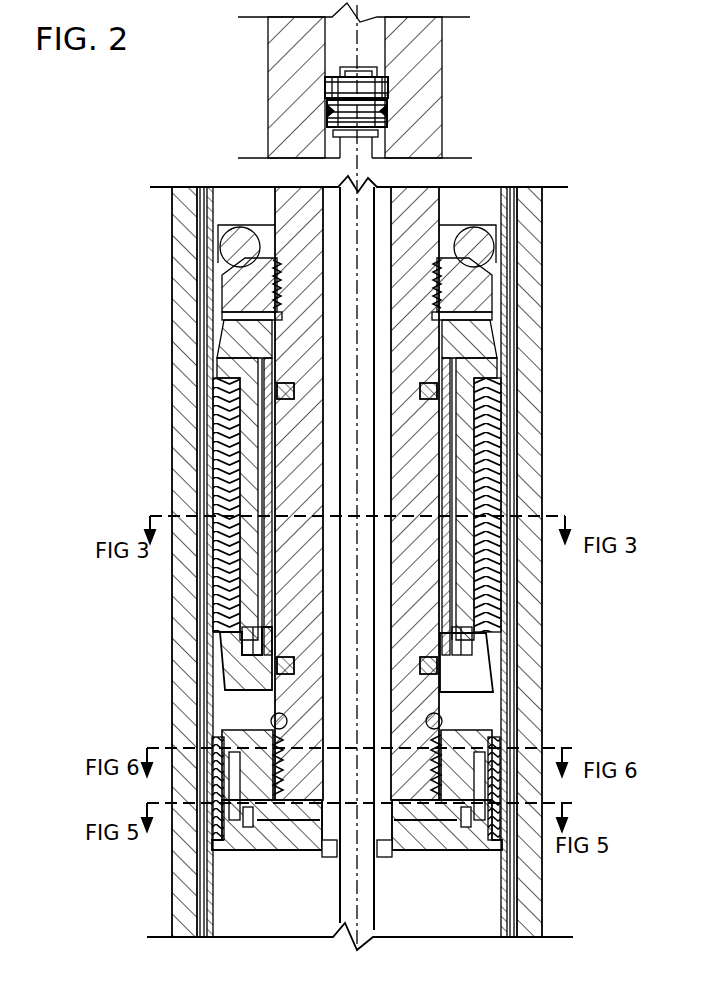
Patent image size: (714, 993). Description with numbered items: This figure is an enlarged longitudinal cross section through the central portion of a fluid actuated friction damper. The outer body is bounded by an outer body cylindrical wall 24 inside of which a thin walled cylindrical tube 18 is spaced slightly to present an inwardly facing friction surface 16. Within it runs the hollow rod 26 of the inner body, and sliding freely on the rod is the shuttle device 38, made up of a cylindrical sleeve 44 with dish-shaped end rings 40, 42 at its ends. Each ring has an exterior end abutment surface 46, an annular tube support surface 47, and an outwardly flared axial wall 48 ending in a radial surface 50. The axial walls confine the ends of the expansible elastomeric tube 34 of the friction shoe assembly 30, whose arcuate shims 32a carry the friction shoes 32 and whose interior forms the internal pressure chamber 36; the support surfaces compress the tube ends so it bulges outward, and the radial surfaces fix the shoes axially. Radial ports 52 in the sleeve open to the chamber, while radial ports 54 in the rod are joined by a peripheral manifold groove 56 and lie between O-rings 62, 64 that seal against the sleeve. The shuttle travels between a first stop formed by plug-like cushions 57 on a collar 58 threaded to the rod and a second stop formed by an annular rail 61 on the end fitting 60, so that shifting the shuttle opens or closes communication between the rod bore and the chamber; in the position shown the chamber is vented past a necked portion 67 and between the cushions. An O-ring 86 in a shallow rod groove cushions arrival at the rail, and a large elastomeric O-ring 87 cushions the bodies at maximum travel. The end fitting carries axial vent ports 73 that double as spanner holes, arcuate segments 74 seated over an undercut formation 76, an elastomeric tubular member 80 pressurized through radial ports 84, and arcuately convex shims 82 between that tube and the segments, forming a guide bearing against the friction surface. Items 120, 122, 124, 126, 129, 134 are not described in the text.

The friction surface 16 is at (359, 164).
The cylindrical tube 18 is at (555, 542).
The outer body cylindrical wall 24 is at (155, 562).
The hollow rod 26 is at (332, 80).
The friction shoe assembly 30 is at (554, 384).
The friction shoes 32 is at (400, 562).
The arcuate shims 32a is at (410, 562).
The expansible elastomeric tube 34 is at (313, 320).
The internal pressure chamber 36 is at (410, 505).
The shuttle device 38 is at (524, 658).
The end ring 40 is at (409, 484).
The end ring 42 is at (415, 744).
The cylindrical sleeve 44 is at (357, 493).
The exterior end abutment surface 46 is at (359, 509).
The annular tube support surface 47 is at (184, 615).
The outwardly flared axial wall 48 is at (200, 660).
The radial surface 50 is at (295, 643).
The radial ports 52 is at (357, 326).
The radial ports 54 is at (357, 506).
The peripheral manifold groove 56 is at (357, 499).
The plug-like cushions 57 is at (308, 285).
The collar 58 is at (527, 254).
The end fitting 60 is at (357, 846).
The annular rail 61 is at (440, 751).
The O-ring 62 is at (357, 389).
The O-ring 64 is at (357, 636).
The necked portion 67 is at (357, 284).
The axial vent ports 73 is at (432, 852).
The arcuate segments 74 is at (553, 871).
The undercut formation 76 is at (434, 846).
The elastomeric tubular member 80 is at (410, 788).
The arcuately convex shims 82 is at (171, 853).
The radial ports 84 is at (326, 850).
The O-ring 86 is at (377, 712).
The elastomeric O-ring 87 is at (222, 206).
The conduit 120 is at (412, 558).
The centerline conduit 122 is at (299, 480).
The coupling 124 is at (296, 62).
The upper housing 126 is at (447, 87).
The inner tube 129 is at (402, 545).
The connector 134 is at (419, 122).